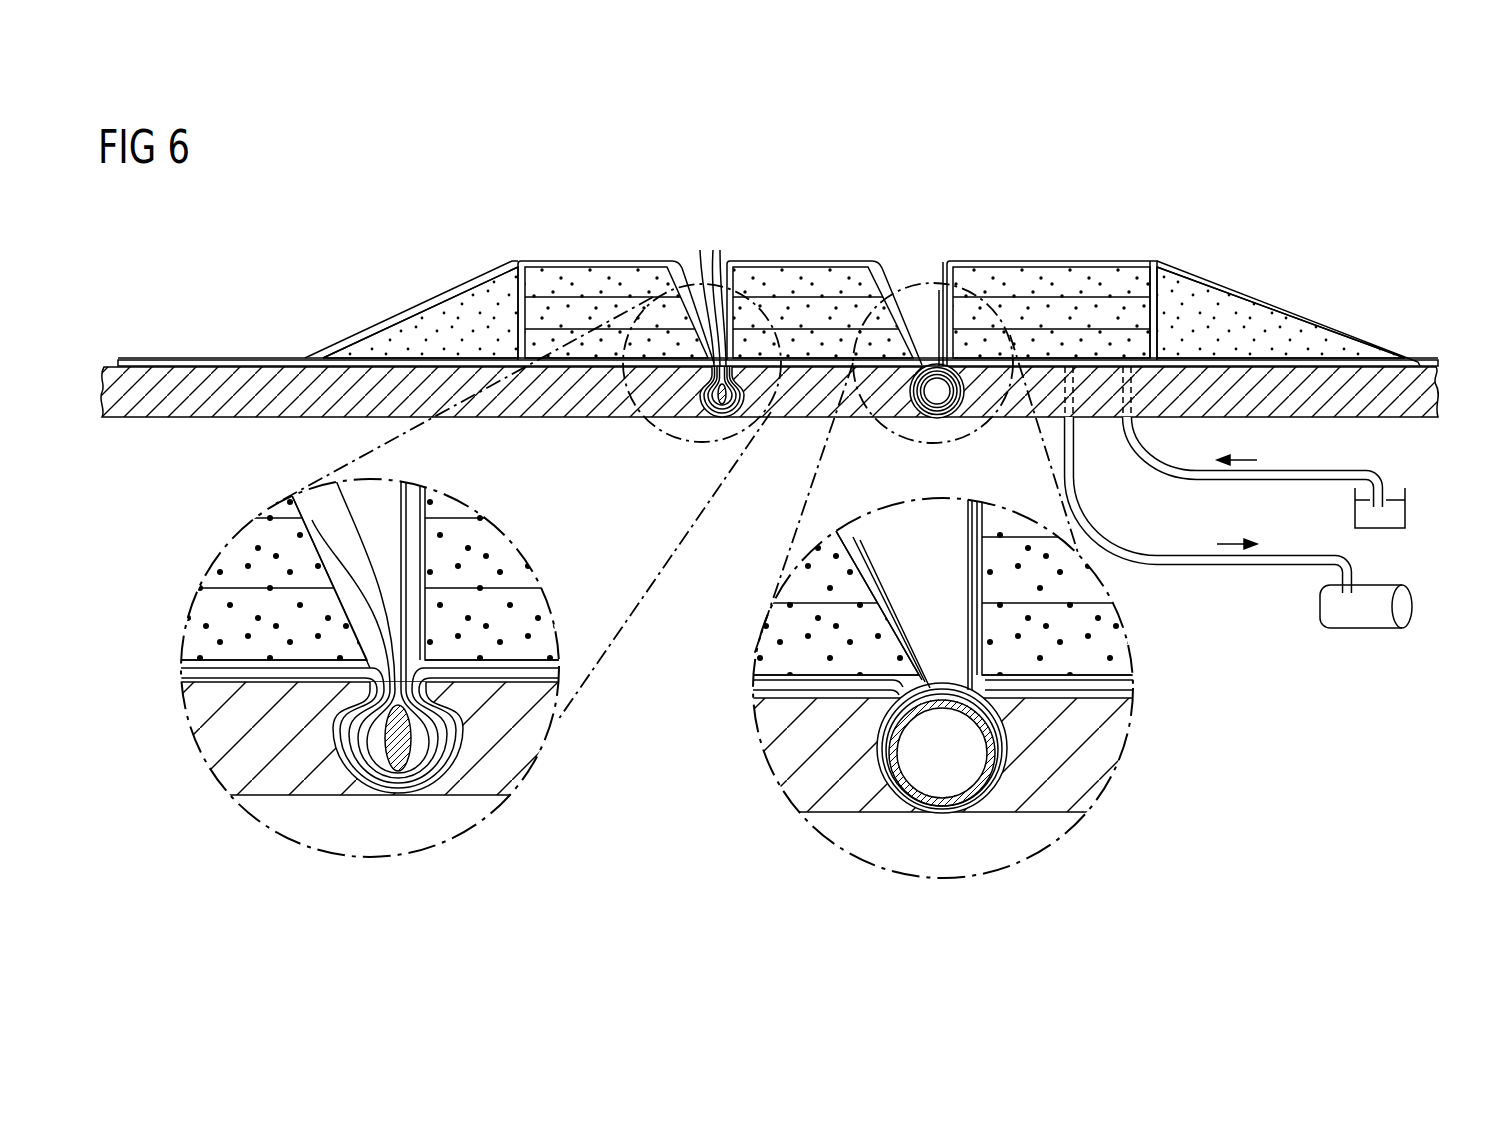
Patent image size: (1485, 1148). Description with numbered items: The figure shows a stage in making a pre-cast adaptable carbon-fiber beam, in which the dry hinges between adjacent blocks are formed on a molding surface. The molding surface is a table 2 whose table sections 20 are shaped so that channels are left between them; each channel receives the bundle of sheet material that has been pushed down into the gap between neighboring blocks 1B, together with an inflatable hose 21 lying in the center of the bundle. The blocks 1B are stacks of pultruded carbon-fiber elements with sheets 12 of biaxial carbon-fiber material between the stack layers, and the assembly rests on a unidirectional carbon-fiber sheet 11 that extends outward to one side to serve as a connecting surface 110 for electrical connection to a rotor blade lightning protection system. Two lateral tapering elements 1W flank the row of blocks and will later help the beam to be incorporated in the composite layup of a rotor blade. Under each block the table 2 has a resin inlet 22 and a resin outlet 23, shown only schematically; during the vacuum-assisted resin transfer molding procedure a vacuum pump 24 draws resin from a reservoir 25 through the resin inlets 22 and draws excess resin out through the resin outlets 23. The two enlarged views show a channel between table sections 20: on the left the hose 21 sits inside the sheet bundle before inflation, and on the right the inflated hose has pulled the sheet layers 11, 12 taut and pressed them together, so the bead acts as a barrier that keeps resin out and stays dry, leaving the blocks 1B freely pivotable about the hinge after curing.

The block 1B is at (600, 228).
The lateral tapering element 1W is at (463, 300).
The connecting surface 110 is at (195, 358).
The table 2 is at (200, 407).
The unidirectional carbon-fiber sheet 11 is at (675, 258).
The biaxial carbon-fiber sheet 12 is at (708, 268).
The table section 20 is at (520, 403).
The channel 21 is at (393, 743).
The resin inlet 22 is at (1283, 470).
The resin outlet 23 is at (1275, 558).
The vacuum pump 24 is at (1406, 604).
The reservoir 25 is at (1397, 514).